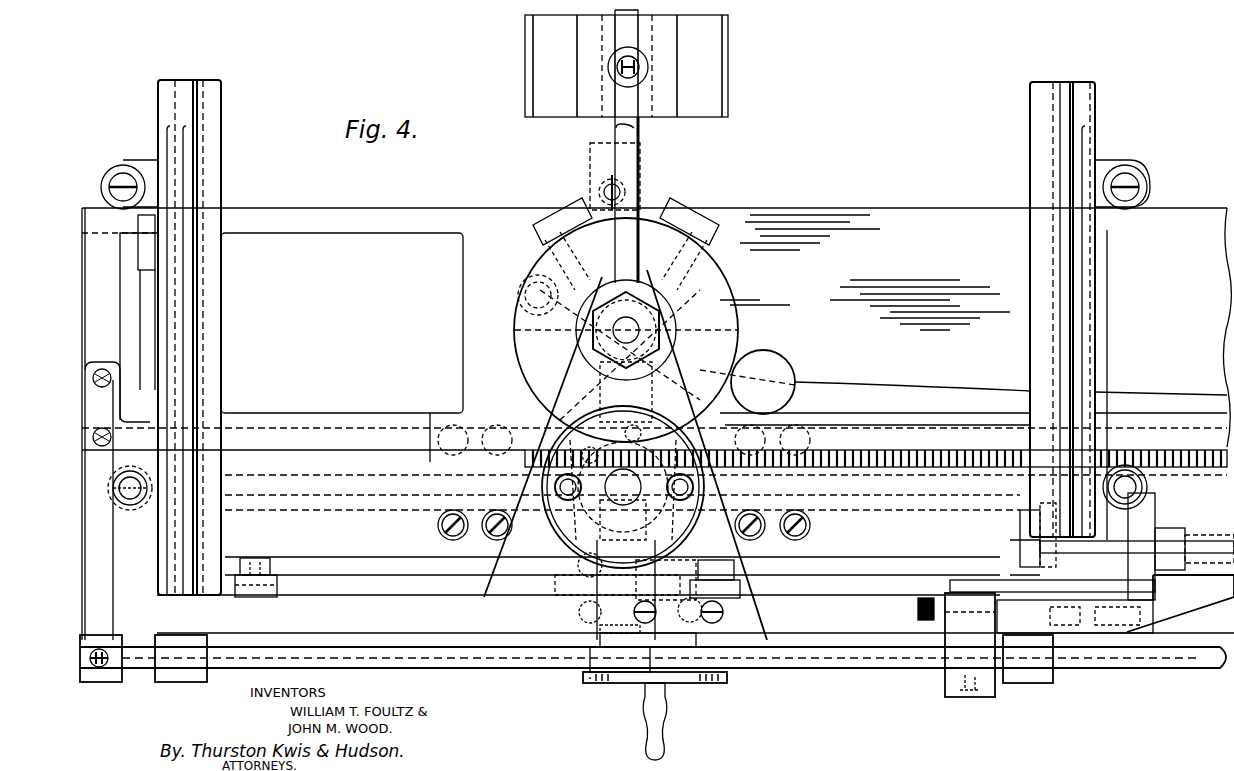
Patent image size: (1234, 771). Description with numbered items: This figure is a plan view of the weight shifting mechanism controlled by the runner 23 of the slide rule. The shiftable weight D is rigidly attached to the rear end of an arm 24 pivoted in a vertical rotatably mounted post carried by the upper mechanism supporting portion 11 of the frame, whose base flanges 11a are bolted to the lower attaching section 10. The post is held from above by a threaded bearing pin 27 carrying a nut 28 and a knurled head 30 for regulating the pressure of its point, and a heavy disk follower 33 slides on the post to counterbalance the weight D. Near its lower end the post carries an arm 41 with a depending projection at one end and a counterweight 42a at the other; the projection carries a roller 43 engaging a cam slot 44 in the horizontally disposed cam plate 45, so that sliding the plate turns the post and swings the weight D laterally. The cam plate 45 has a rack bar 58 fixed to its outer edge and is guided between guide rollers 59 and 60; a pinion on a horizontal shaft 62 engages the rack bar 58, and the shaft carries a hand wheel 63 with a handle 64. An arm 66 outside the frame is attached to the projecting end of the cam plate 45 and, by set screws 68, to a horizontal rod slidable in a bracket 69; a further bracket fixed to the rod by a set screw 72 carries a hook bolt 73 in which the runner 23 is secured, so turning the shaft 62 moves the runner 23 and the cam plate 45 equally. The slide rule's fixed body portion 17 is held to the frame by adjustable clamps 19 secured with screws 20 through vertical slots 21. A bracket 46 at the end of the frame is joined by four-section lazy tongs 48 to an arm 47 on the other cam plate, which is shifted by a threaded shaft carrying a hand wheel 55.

The lower attaching section 10 is at (1027, 686).
The upper mechanism supporting portion 11 is at (157, 608).
The base flanges 11a is at (221, 165).
The fixed body portion 17 is at (902, 566).
The adjustable clamps 19 is at (242, 592).
The screws 20 is at (708, 562).
The vertical slots 21 is at (945, 688).
The runner 23 is at (984, 566).
The arm 24 is at (638, 155).
The bearing pin 27 is at (600, 357).
The nut 28 is at (665, 340).
The knurled head 30 is at (660, 306).
The follower 33 is at (730, 296).
The arm 41 is at (548, 322).
The counterweight 42a is at (790, 392).
The roller 43 is at (518, 295).
The cam slot 44 is at (902, 386).
The cam plate 45 is at (868, 208).
The bracket 46 is at (1190, 608).
The arm 47 is at (1018, 521).
The lazy tongs 48 is at (1168, 530).
The hand wheel 55 is at (1155, 508).
The rack bar 58 is at (830, 452).
The guide roller 59 is at (1147, 478).
The guide roller 60 is at (124, 166).
The horizontal shaft 62 is at (500, 667).
The hand wheel 63 is at (700, 683).
The handle 64 is at (664, 727).
The arm 66 is at (113, 547).
The set screws 68 is at (99, 667).
The bracket 69 is at (178, 676).
The set screw 72 is at (968, 692).
The hook bolt 73 is at (1075, 616).
The shiftable weight D is at (728, 93).